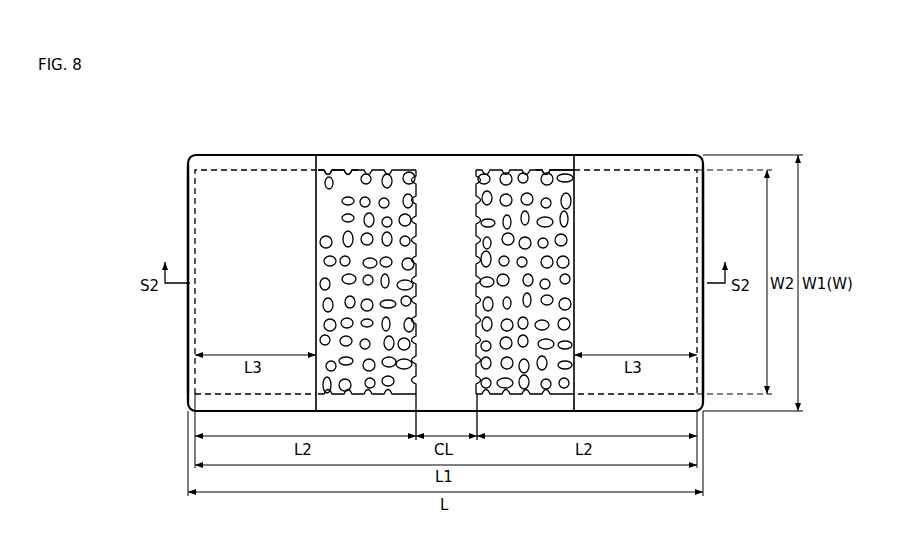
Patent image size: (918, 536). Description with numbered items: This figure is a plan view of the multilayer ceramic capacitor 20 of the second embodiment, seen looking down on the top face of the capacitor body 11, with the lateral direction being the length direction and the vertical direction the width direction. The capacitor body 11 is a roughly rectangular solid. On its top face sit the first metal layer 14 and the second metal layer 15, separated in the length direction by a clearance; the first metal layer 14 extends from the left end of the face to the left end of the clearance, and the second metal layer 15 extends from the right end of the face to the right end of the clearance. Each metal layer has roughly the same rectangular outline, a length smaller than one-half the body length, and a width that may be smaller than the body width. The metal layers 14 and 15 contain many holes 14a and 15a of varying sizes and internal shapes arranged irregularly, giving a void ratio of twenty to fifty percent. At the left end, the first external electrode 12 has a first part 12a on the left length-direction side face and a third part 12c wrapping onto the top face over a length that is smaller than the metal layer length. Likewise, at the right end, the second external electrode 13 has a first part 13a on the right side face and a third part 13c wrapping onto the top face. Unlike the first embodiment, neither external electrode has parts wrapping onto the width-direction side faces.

The multilayer ceramic capacitor 20 is at (209, 151).
The capacitor body 11 is at (441, 154).
The first external electrode 12 is at (190, 223).
The first part 12a is at (190, 320).
The third part 12c is at (255, 200).
The second external electrode 13 is at (704, 223).
The first part 13a is at (704, 322).
The third part 13c is at (637, 200).
The first metal layer 14 is at (372, 172).
The holes 14a is at (330, 172).
The second metal layer 15 is at (527, 172).
The holes 15a is at (558, 172).